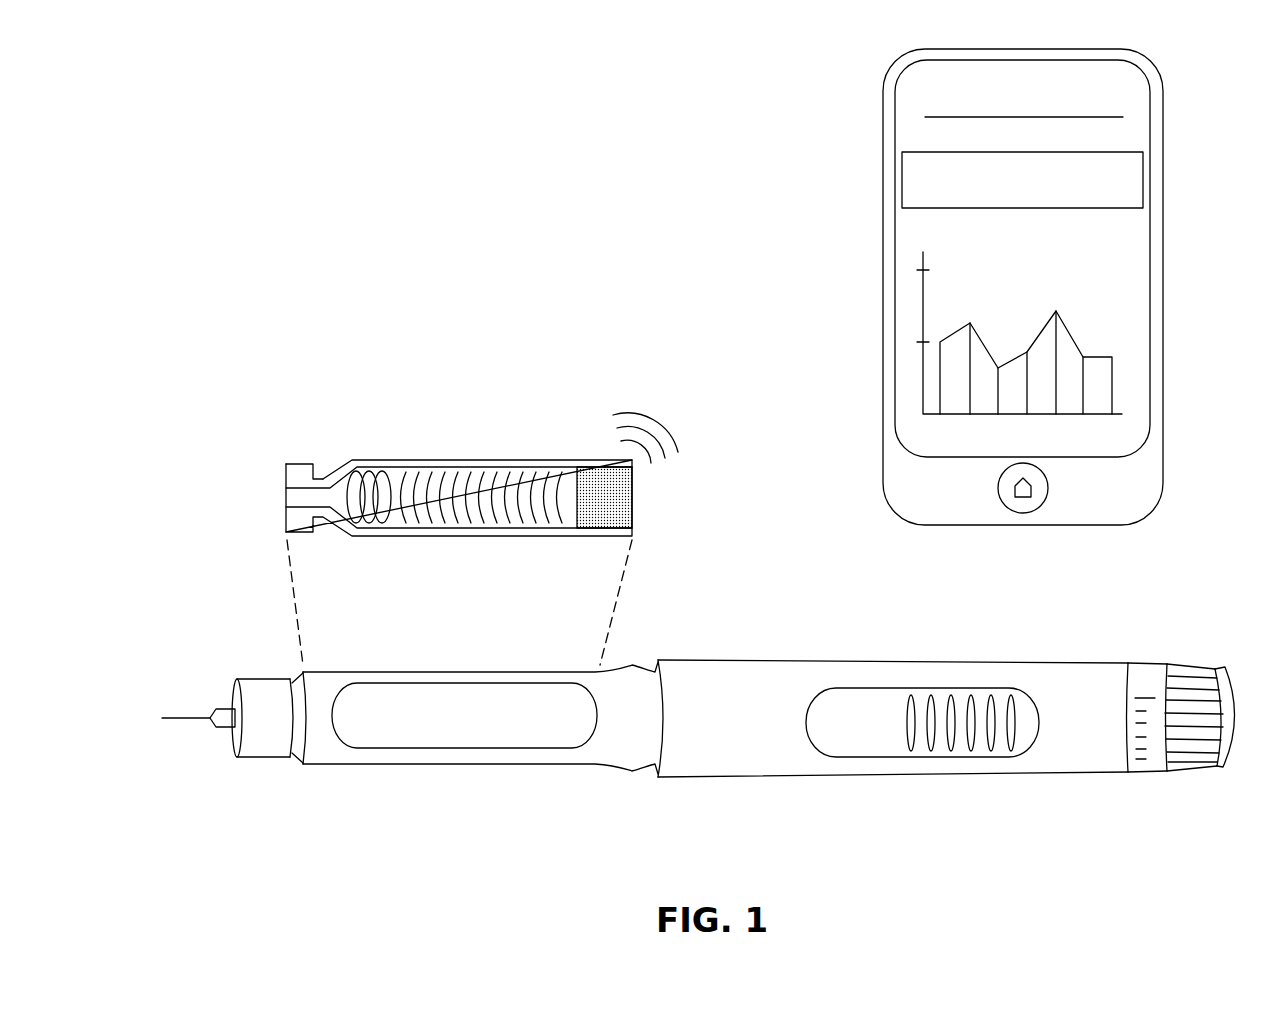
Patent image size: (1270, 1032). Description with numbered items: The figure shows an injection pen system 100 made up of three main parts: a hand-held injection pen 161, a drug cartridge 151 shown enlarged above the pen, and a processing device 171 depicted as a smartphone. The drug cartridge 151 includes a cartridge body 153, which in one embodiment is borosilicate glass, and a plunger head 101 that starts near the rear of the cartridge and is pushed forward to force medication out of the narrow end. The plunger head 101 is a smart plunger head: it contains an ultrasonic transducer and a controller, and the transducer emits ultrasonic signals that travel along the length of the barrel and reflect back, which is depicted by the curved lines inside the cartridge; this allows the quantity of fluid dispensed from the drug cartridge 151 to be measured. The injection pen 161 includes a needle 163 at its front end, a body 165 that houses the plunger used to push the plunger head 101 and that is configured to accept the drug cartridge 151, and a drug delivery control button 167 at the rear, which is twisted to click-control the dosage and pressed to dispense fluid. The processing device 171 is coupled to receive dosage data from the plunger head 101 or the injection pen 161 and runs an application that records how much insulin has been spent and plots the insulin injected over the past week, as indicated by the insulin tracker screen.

The injection pen system 100 is at (530, 178).
The plunger head 101 is at (622, 515).
The drug cartridge 151 is at (476, 450).
The cartridge body 153 is at (434, 462).
The injection pen 161 is at (729, 648).
The needle 163 is at (262, 687).
The body 165 is at (768, 759).
The drug delivery control button 167 is at (1187, 763).
The processing device 171 is at (1006, 35).